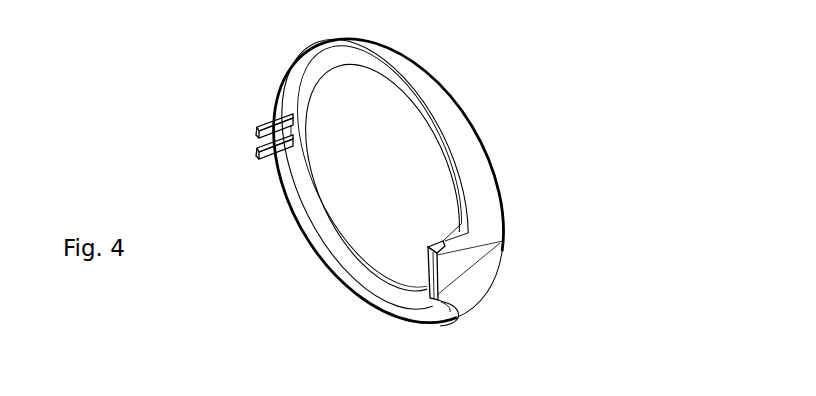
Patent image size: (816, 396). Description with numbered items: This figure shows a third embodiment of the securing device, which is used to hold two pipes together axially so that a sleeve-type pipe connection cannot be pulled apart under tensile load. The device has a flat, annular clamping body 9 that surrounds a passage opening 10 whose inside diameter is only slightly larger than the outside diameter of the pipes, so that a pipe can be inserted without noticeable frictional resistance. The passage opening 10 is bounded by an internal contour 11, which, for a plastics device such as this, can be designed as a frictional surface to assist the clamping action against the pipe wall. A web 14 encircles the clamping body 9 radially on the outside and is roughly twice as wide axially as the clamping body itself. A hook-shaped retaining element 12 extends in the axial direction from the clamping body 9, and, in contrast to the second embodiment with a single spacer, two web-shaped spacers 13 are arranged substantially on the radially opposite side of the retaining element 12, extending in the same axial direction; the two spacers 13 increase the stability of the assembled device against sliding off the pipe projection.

The clamping body 9 is at (463, 160).
The passage opening 10 is at (357, 203).
The internal contour 11 is at (380, 270).
The retaining element 12 is at (433, 250).
The spacer 13 is at (262, 125).
The web 14 is at (366, 291).